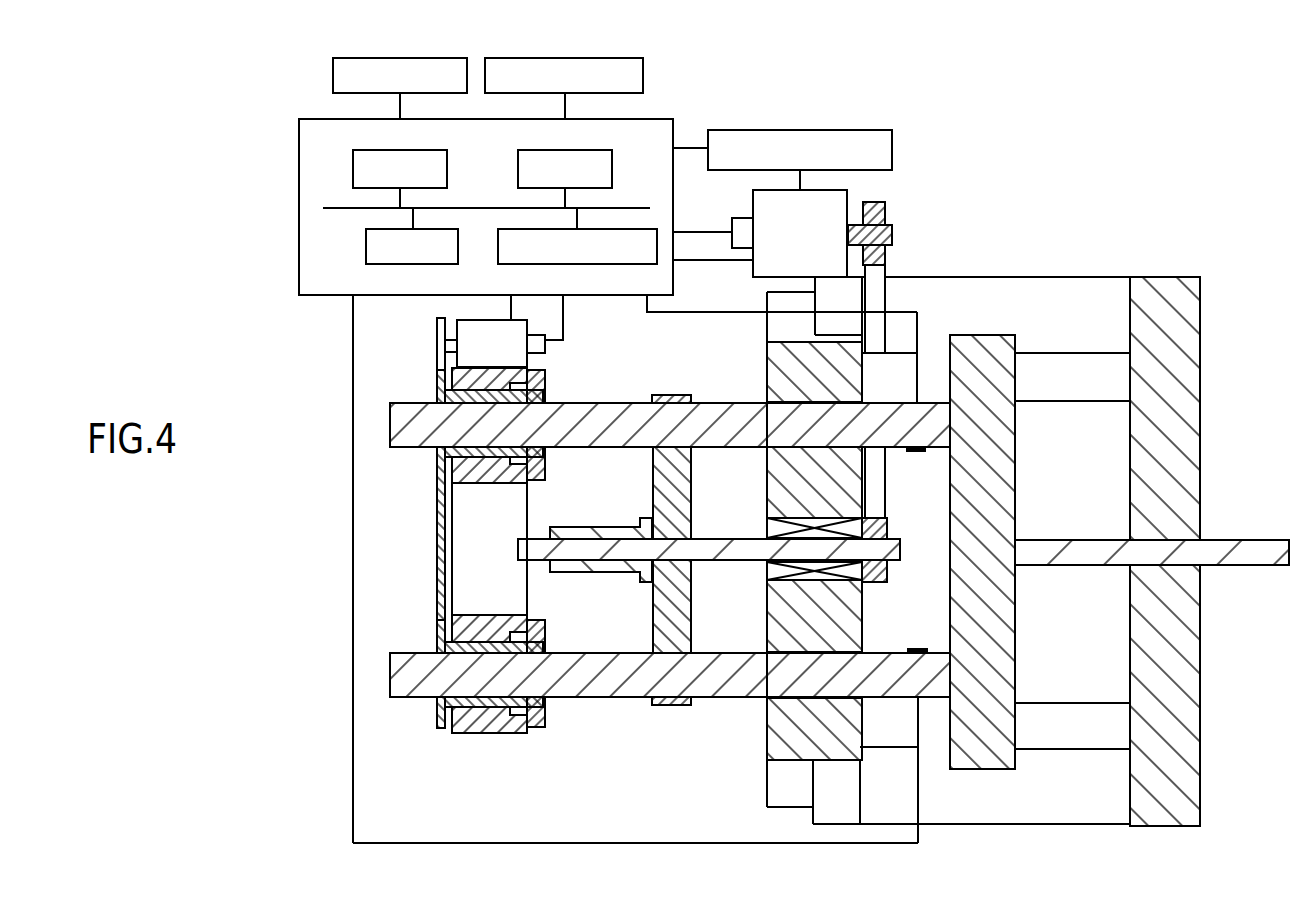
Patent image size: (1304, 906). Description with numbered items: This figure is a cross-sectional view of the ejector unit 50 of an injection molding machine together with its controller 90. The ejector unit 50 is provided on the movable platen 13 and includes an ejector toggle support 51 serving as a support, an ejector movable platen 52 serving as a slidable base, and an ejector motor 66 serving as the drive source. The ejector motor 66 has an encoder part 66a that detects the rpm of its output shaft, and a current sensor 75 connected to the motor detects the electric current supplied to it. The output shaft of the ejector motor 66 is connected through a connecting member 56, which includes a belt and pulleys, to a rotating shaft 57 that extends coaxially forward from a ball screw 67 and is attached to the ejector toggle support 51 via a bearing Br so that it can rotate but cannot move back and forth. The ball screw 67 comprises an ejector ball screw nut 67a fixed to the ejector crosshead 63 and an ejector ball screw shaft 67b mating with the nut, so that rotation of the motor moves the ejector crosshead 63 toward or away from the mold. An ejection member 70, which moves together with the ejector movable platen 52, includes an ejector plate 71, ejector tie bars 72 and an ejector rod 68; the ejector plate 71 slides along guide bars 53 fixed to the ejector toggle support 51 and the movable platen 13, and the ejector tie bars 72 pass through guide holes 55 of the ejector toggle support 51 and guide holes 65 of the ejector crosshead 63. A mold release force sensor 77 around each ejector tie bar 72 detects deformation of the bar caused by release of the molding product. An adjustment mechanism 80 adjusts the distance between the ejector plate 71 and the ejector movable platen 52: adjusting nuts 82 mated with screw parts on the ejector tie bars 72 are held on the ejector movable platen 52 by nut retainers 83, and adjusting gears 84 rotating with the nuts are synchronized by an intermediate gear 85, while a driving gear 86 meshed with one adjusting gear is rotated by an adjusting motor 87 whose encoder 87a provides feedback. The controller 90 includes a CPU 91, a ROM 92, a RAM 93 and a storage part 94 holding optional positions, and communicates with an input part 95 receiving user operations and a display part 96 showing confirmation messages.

The movable platen 13 is at (982, 283).
The ejector unit 50 is at (708, 712).
The ejector toggle support 51 is at (768, 360).
The ejector movable platen 52 is at (483, 733).
The guide bars 53 is at (1073, 367).
The guide holes 55 is at (782, 401).
The connecting member 56 is at (898, 298).
The rotating shaft 57 is at (722, 543).
The ejector crosshead 63 is at (653, 627).
The guide holes 65 is at (670, 395).
The ejector motor 66 is at (762, 270).
The encoder part 66a is at (747, 222).
The ball screw 67 is at (648, 490).
The ejector ball screw nut 67a is at (588, 535).
The ejector ball screw shaft 67b is at (620, 550).
The ejector rod 68 is at (1075, 546).
The ejection member 70 is at (1119, 561).
The ejector plate 71 is at (985, 768).
The ejector tie bars 72 is at (900, 440).
The current sensor 75 is at (805, 130).
The mold release force sensor 77 is at (918, 452).
The adjustment mechanism 80 is at (490, 543).
The adjusting nuts 82 is at (465, 452).
The nut retainers 83 is at (540, 383).
The adjusting gears 84 is at (440, 387).
The intermediate gear 85 is at (440, 553).
The driving gear 86 is at (440, 342).
The adjusting motor 87 is at (477, 330).
The encoder 87a is at (535, 350).
The controller 90 is at (298, 168).
The CPU 91 is at (418, 150).
The ROM 92 is at (583, 150).
The RAM 93 is at (440, 264).
The storage part 94 is at (603, 264).
The input part 95 is at (419, 58).
The display part 96 is at (584, 58).
The bearing Br is at (789, 517).